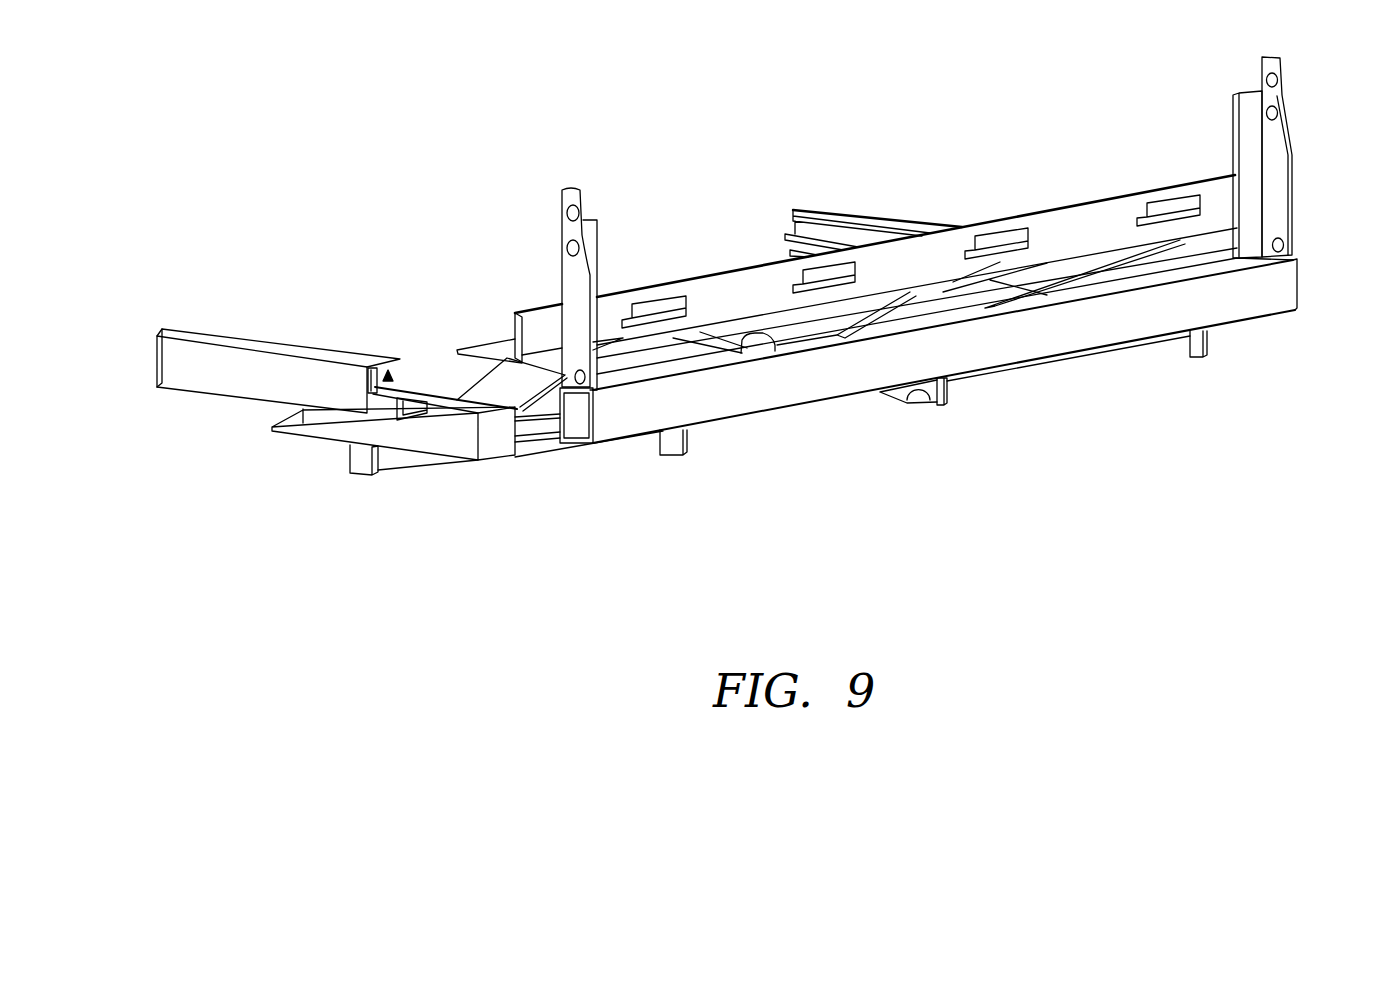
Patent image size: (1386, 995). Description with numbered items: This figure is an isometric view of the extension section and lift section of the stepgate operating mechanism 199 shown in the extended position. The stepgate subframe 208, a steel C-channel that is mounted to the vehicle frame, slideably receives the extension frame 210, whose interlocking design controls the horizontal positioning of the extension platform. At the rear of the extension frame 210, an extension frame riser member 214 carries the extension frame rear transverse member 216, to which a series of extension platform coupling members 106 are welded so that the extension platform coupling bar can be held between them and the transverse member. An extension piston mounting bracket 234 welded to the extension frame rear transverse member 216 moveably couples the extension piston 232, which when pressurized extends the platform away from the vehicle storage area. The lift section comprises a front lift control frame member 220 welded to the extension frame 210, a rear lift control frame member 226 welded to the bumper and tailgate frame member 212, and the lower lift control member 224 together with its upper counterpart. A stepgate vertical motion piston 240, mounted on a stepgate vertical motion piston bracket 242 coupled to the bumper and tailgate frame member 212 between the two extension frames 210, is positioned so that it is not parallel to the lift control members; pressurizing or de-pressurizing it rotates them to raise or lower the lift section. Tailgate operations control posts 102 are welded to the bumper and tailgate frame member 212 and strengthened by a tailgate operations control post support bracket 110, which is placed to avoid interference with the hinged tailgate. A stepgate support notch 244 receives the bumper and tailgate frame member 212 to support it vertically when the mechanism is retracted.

The tailgate operations control post 102 is at (573, 290).
The extension platform coupling member 106 is at (666, 312).
The tailgate operations control post support bracket 110 is at (1272, 112).
The stepgate operating mechanism 199 is at (355, 612).
The stepgate subframe 208 is at (236, 375).
The extension frame 210 is at (943, 300).
The bumper and tailgate frame member 212 is at (678, 404).
The extension frame riser member 214 is at (505, 372).
The extension frame rear transverse member 216 is at (1233, 183).
The front lift control frame member 220 is at (352, 458).
The lower lift control member 224 is at (550, 450).
The rear lift control frame member 226 is at (663, 454).
The extension piston 232 is at (718, 340).
The extension piston mounting bracket 234 is at (760, 328).
The stepgate vertical motion piston 240 is at (908, 392).
The stepgate vertical motion piston bracket 242 is at (948, 398).
The stepgate support notch 244 is at (375, 368).